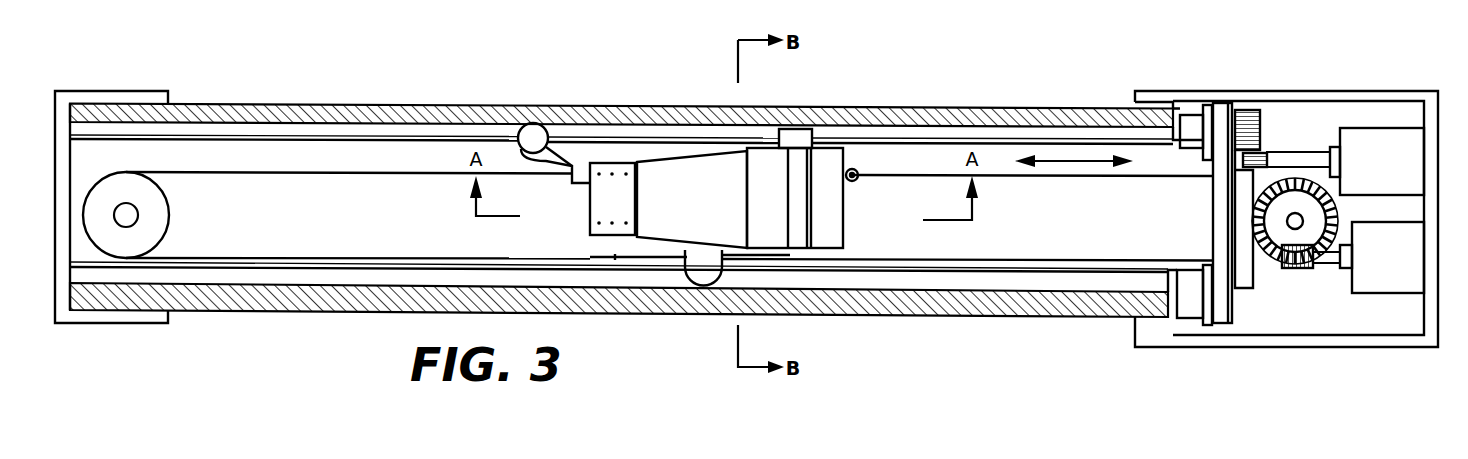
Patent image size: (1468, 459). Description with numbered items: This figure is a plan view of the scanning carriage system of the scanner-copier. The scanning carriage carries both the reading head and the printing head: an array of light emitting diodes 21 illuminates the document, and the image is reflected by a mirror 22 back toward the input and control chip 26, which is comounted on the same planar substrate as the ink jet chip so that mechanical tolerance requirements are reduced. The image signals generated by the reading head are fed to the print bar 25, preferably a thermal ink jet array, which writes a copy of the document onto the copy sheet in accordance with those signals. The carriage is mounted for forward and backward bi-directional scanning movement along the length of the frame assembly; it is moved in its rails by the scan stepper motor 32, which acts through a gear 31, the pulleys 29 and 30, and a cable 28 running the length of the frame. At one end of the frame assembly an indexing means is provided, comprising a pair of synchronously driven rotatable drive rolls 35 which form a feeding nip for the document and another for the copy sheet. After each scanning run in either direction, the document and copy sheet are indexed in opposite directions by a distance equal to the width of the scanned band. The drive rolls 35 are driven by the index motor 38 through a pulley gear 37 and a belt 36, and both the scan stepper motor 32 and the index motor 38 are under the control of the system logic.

The array of light emitting diodes 21 is at (835, 200).
The mirror 22 is at (760, 221).
The print bar 25 is at (620, 200).
The input and control chip 26 is at (588, 222).
The cable 28 is at (305, 175).
The pulley 29 is at (170, 213).
The pulley 30 is at (1292, 266).
The gear 31 is at (1338, 210).
The scan stepper motor 32 is at (1378, 293).
The drive rolls 35 is at (1190, 120).
The belt 36 is at (1215, 196).
The pulley gear 37 is at (1242, 105).
The index motor 38 is at (1377, 128).